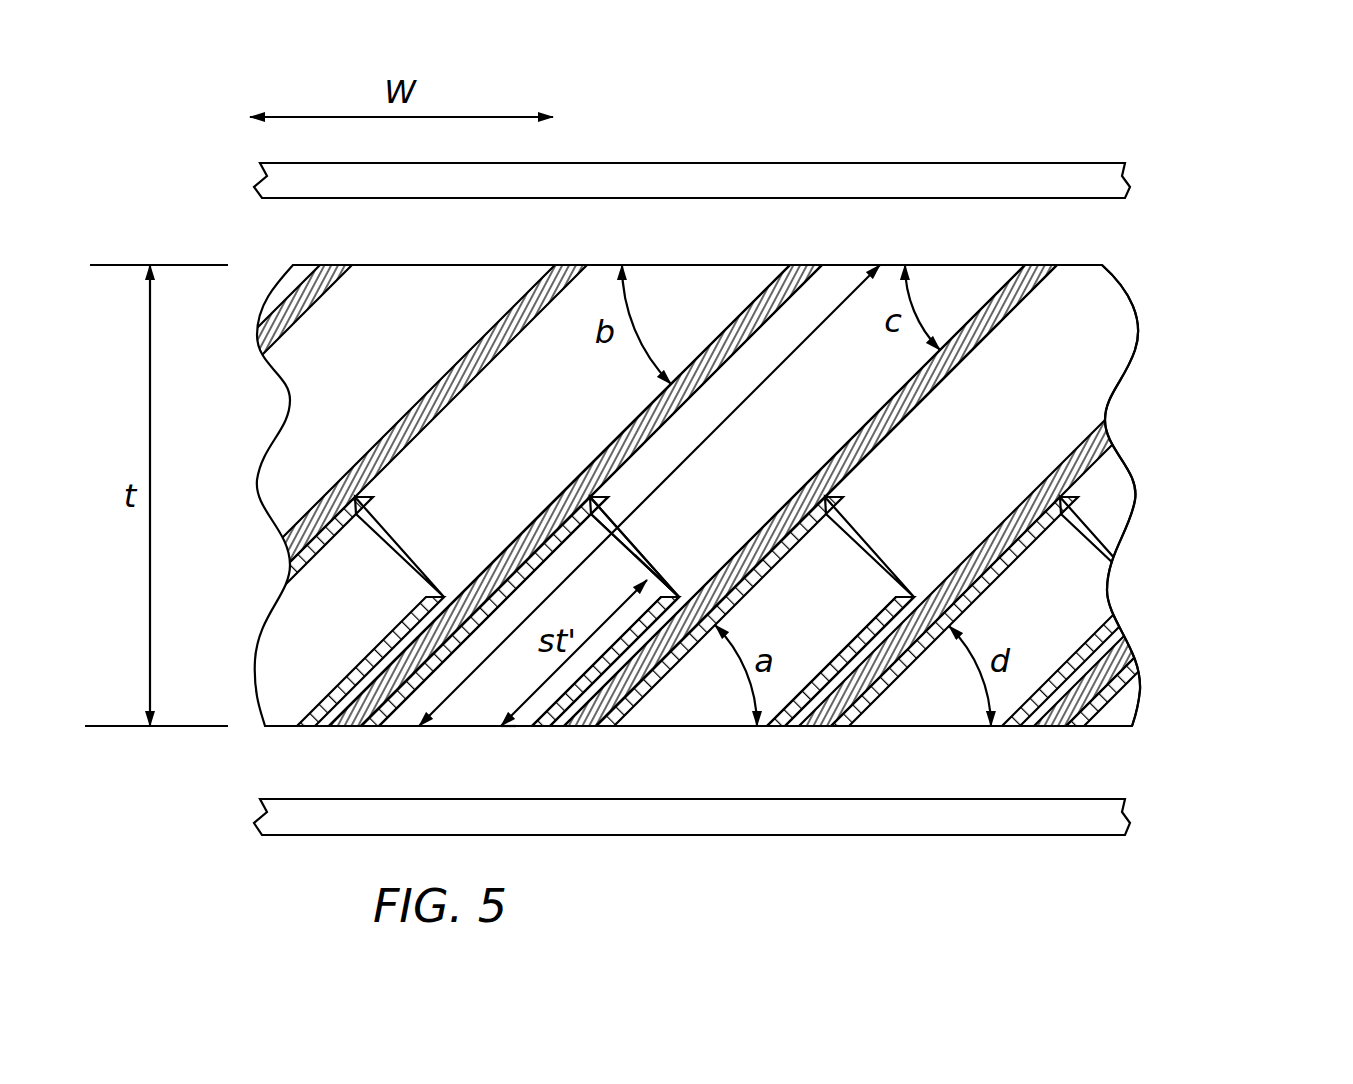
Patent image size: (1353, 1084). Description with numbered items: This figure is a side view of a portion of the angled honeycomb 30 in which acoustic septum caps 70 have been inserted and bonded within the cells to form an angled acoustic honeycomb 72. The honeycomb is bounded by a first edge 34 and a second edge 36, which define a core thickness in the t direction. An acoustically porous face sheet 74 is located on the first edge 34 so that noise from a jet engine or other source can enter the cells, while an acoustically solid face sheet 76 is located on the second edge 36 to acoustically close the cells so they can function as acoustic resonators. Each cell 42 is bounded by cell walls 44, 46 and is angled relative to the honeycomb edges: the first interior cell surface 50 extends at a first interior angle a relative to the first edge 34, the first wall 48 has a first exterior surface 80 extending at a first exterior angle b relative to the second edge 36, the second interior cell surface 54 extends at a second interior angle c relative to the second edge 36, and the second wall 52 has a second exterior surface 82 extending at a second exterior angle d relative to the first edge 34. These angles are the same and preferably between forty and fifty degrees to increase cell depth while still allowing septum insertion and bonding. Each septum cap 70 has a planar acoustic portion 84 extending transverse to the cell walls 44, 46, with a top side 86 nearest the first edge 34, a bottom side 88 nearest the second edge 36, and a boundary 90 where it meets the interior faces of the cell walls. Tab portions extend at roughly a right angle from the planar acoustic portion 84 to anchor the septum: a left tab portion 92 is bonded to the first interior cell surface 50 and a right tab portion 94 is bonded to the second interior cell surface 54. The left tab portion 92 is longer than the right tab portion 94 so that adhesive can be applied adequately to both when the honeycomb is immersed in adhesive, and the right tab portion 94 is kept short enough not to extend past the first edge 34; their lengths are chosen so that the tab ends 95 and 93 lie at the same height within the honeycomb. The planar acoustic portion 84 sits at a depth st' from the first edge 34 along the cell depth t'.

The angled honeycomb 30 is at (975, 265).
The first edge 34 is at (1118, 730).
The second edge 36 is at (383, 265).
The cell 42 is at (649, 495).
The cell wall 44 is at (752, 338).
The cell wall 46 is at (876, 412).
The first wall 48 is at (723, 338).
The first interior cell surface 50 is at (710, 375).
The second wall 52 is at (926, 395).
The second interior cell surface 54 is at (990, 318).
The acoustic septum cap 70 is at (403, 547).
The angled acoustic honeycomb 72 is at (1142, 463).
The acoustically porous face sheet 74 is at (998, 822).
The acoustically solid face sheet 76 is at (850, 177).
The first exterior surface 80 is at (553, 490).
The second exterior surface 82 is at (872, 453).
The planar acoustic portion 84 is at (667, 572).
The top side 86 is at (623, 554).
The bottom side 88 is at (624, 536).
The boundary 90 is at (930, 578).
The left tab portion 92 is at (523, 583).
The end of left tab portion 93 is at (383, 728).
The right tab portion 94 is at (570, 690).
The end of right tab portion 95 is at (500, 728).